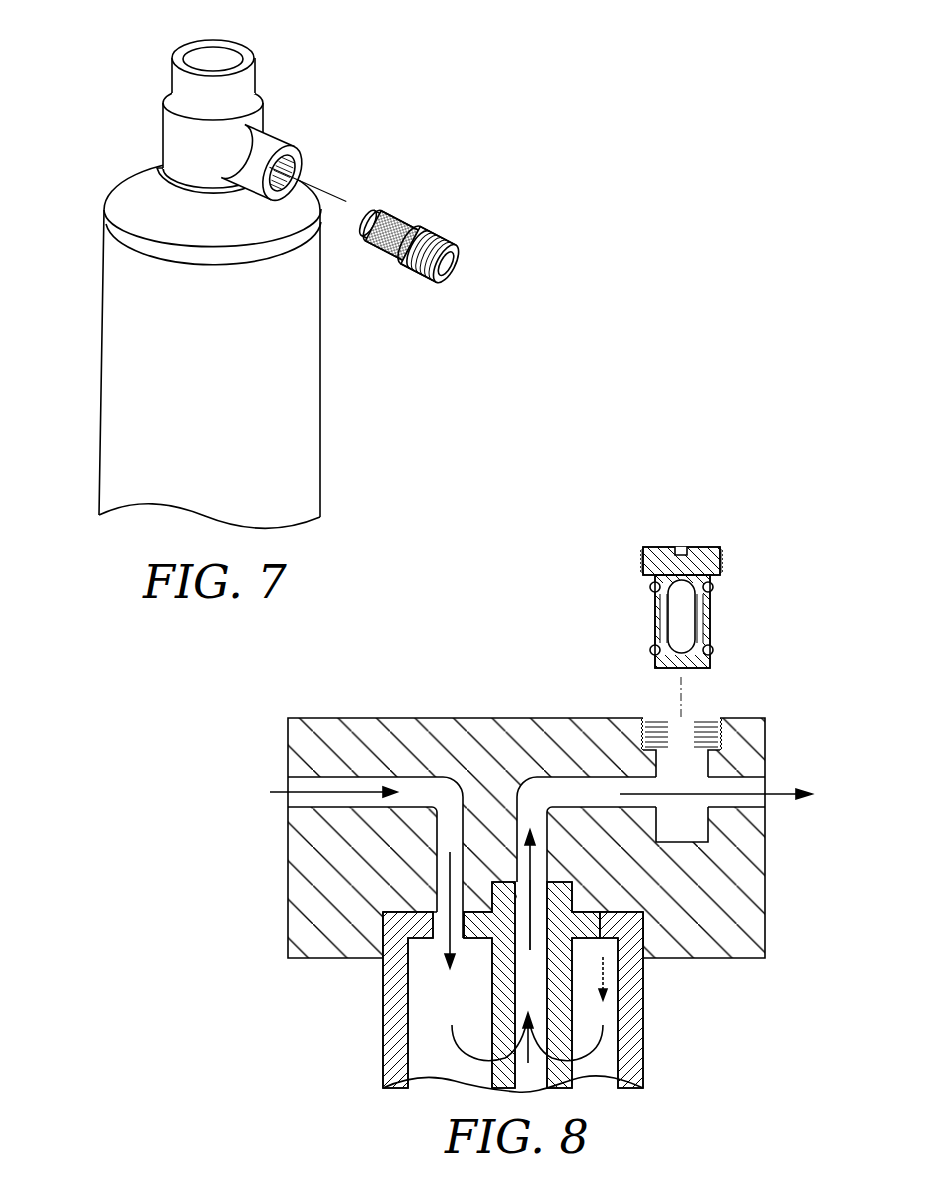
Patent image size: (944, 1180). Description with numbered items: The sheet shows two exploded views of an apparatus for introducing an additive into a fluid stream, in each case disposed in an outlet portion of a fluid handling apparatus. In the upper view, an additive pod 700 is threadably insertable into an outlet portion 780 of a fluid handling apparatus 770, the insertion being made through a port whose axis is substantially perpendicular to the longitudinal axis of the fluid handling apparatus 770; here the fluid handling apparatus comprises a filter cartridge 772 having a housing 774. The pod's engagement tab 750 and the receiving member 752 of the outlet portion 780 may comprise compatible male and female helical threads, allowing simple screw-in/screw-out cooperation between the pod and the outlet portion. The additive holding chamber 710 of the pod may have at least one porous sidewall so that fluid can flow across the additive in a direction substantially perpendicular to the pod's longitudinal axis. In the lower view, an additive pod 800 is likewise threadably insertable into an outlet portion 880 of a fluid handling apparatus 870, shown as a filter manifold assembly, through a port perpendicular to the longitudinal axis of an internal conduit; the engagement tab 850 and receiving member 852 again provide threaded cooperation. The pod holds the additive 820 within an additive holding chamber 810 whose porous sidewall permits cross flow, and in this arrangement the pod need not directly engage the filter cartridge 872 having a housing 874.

In FIG. 7, the additive pod 700 is at (443, 222).
In FIG. 7, the additive holding chamber 710 is at (402, 217).
In FIG. 7, the engagement tab 750 is at (443, 233).
In FIG. 7, the receiving member 752 is at (306, 170).
In FIG. 7, the fluid handling apparatus 770 is at (227, 268).
In FIG. 7, the filter cartridge 772 is at (296, 405).
In FIG. 7, the housing 774 is at (320, 327).
In FIG. 7, the outlet portion 780 is at (206, 52).
In FIG. 8, the additive pod 800 is at (720, 622).
In FIG. 8, the additive holding chamber 810 is at (698, 627).
In FIG. 8, the additive 820 is at (683, 602).
In FIG. 8, the engagement tab 850 is at (722, 558).
In FIG. 8, the receiving member 852 is at (705, 724).
In FIG. 8, the fluid handling apparatus 870 is at (482, 828).
In FIG. 8, the filter cartridge 872 is at (643, 1045).
In FIG. 8, the housing 874 is at (632, 1000).
In FIG. 8, the outlet portion 880 is at (743, 798).